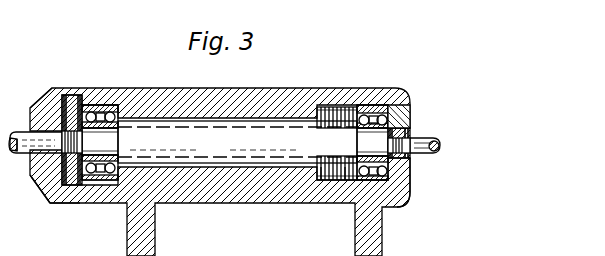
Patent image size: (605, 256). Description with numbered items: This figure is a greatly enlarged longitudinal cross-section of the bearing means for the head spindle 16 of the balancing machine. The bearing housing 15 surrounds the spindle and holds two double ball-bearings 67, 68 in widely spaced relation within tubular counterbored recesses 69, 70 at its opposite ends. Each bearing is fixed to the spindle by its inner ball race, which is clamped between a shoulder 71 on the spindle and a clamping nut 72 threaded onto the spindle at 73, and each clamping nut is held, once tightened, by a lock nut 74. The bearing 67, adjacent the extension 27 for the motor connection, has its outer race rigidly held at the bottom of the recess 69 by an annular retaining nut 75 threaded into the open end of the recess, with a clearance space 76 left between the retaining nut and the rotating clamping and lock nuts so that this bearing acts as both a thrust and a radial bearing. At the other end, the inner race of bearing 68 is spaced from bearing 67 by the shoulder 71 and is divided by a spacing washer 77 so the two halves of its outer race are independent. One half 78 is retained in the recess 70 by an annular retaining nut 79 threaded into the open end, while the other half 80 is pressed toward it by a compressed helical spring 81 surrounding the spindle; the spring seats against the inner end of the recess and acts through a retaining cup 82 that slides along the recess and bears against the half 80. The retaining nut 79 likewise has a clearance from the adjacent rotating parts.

The bearing housing 15 is at (185, 88).
The head spindle 16 is at (439, 139).
The extension for the motor connection 27 is at (15, 132).
The double ball-bearing 67 is at (111, 112).
The double ball-bearing 68 is at (382, 114).
The counterbored recess 69 is at (98, 112).
The counterbored recess 70 is at (321, 110).
The shoulder 71 is at (126, 142).
The clamping nut 72 is at (72, 105).
The threaded portion 73 is at (84, 142).
The lock nut 74 is at (44, 104).
The annular retaining nut 75 is at (58, 186).
The clearance space 76 is at (41, 181).
The spacing washer 77 is at (372, 114).
The half of outer ball race 78 is at (398, 102).
The annular retaining nut 79 is at (409, 180).
The half of outer ball race 80 is at (356, 110).
The compressed helical spring 81 is at (322, 180).
The retaining cup 82 is at (345, 180).